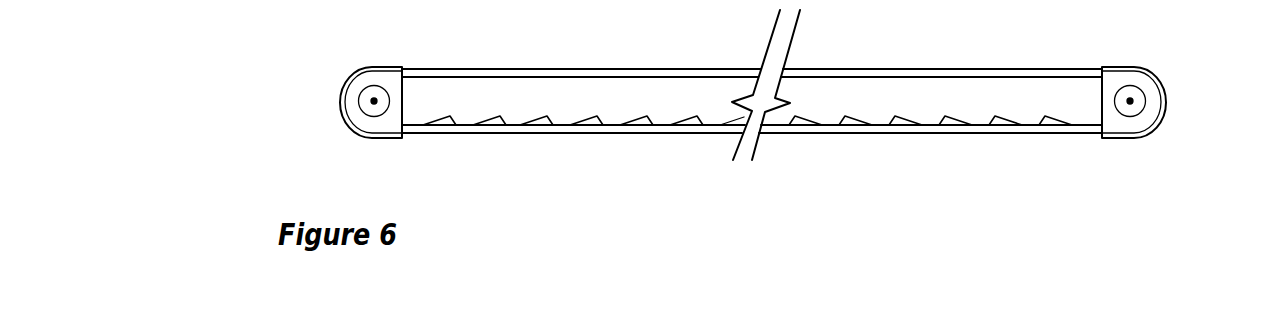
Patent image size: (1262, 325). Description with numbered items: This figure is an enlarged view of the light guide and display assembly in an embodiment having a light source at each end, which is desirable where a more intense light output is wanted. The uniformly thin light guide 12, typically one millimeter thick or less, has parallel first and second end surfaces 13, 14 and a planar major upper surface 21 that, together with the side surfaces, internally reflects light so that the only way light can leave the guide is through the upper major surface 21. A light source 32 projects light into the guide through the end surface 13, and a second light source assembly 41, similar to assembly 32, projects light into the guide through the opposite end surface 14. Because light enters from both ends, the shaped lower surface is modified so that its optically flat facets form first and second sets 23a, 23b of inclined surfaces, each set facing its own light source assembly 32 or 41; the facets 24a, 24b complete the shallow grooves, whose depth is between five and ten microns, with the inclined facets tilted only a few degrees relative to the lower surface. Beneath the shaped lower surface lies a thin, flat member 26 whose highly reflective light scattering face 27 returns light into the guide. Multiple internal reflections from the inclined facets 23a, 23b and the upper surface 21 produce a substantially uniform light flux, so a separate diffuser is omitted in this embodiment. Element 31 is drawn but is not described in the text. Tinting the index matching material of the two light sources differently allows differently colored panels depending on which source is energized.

The light guide 12 is at (888, 97).
The first end surface 13 is at (408, 104).
The second end surface 14 is at (1100, 102).
The planar major upper surface 21 is at (517, 75).
The first set of inclined surfaces 23a is at (690, 125).
The second set of inclined surfaces 23b is at (913, 115).
The facet 24a is at (560, 122).
The facet 24b is at (992, 118).
The thin flat member 26 is at (1002, 130).
The highly reflective light scattering face 27 is at (808, 122).
The guide plate 31 is at (708, 73).
The light source 32 is at (388, 66).
The second light source assembly 41 is at (1165, 75).